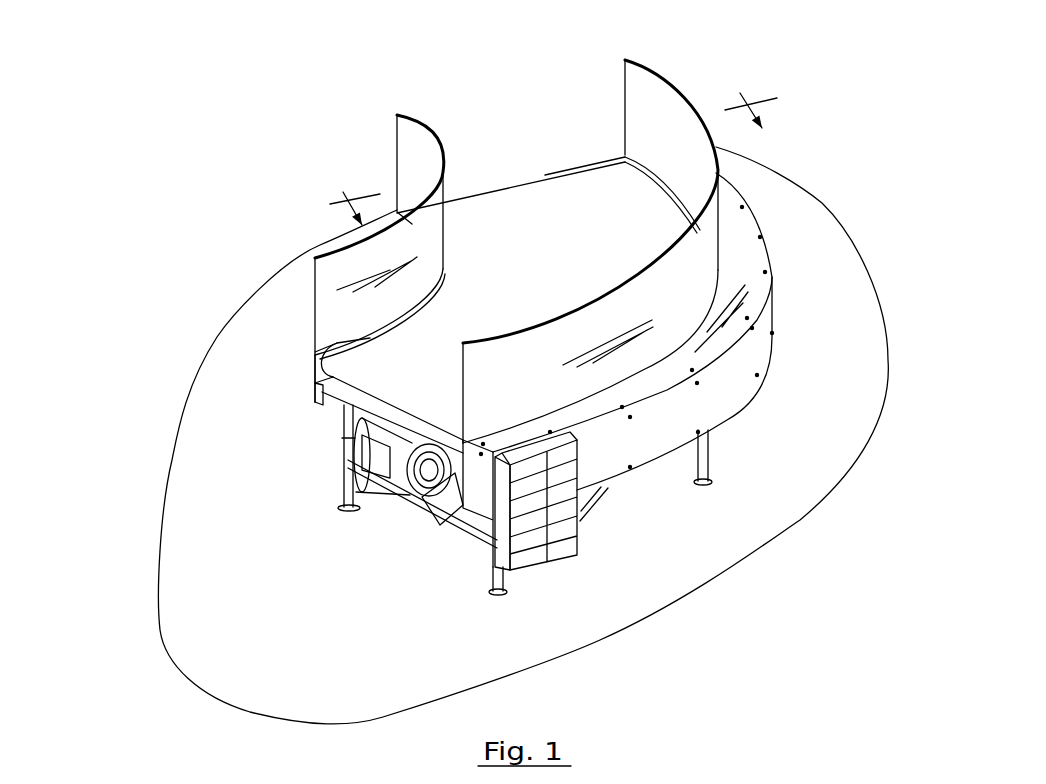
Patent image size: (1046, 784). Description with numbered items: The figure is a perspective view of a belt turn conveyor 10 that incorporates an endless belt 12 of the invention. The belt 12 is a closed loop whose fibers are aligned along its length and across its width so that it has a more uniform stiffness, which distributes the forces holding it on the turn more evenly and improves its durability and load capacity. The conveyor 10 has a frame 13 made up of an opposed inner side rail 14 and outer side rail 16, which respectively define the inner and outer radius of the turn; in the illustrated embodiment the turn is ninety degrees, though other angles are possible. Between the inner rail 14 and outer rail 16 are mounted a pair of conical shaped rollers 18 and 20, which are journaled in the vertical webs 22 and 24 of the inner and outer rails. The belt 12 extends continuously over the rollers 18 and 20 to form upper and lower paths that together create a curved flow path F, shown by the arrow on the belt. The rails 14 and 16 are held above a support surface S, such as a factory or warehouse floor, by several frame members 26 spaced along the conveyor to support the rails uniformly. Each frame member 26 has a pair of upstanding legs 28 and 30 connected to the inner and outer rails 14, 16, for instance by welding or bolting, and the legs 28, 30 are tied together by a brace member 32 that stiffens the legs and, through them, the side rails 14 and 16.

The belt turn conveyor 10 is at (572, 349).
The endless belt 12 is at (580, 183).
The frame 13 is at (780, 355).
The inner side rail 14 is at (315, 372).
The outer side rail 16 is at (478, 482).
The conical shaped roller 18 is at (517, 200).
The conical shaped roller 20 is at (360, 365).
The vertical web 22 is at (317, 386).
The vertical web 24 is at (603, 460).
The frame member 26 is at (551, 544).
The upstanding leg 28 is at (703, 468).
The upstanding leg 30 is at (340, 480).
The brace member 32 is at (397, 500).
The support surface S is at (822, 203).
The curved flow path F is at (560, 207).